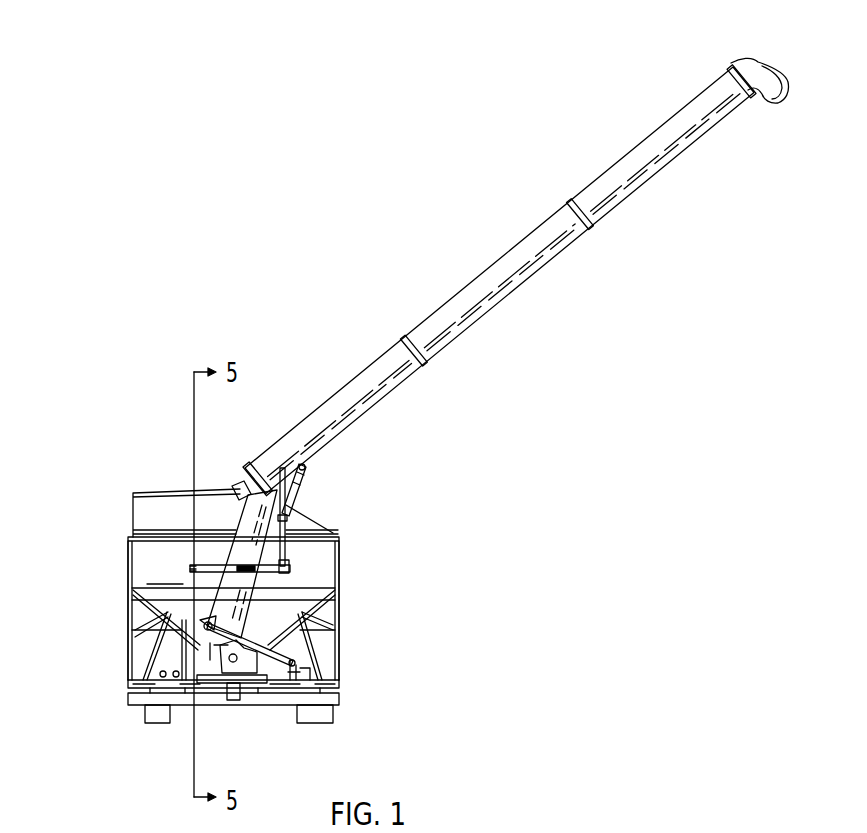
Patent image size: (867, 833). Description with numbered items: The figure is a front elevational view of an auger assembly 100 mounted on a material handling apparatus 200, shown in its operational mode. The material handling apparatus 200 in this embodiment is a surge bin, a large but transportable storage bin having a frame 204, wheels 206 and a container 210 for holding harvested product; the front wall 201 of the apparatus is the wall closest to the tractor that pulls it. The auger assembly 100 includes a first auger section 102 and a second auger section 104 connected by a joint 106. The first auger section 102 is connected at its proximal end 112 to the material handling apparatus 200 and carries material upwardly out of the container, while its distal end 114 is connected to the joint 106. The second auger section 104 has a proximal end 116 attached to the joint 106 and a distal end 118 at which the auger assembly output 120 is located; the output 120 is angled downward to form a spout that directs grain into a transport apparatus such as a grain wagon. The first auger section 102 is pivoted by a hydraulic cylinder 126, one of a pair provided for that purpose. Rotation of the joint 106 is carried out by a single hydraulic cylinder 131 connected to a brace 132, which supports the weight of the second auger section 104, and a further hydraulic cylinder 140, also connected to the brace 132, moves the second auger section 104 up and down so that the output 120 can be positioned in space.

The auger assembly 100 is at (243, 492).
The first auger section 102 is at (233, 549).
The second auger section 104 is at (482, 286).
The joint 106 is at (298, 490).
The proximal end 112 is at (232, 690).
The distal end 114 is at (236, 499).
The proximal end 116 is at (268, 462).
The distal end 118 is at (722, 84).
The auger assembly output 120 is at (769, 96).
The hydraulic cylinder 126 is at (273, 668).
The hydraulic cylinder 131 is at (288, 573).
The brace 132 is at (288, 526).
The hydraulic cylinder 140 is at (305, 470).
The material handling apparatus 200 is at (127, 650).
The front wall 201 is at (165, 571).
The frame 204 is at (340, 665).
The wheels 206 is at (152, 718).
The container 210 is at (127, 577).